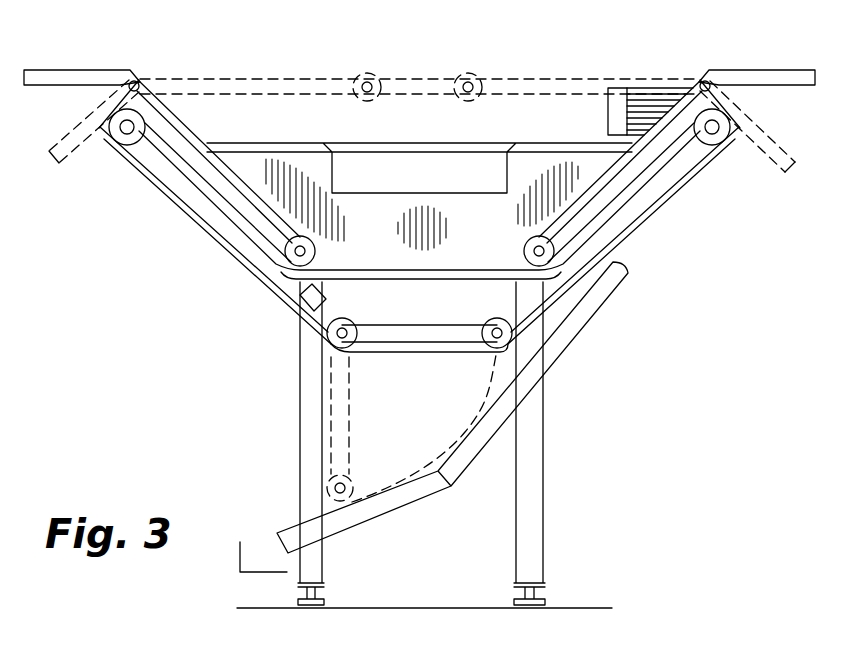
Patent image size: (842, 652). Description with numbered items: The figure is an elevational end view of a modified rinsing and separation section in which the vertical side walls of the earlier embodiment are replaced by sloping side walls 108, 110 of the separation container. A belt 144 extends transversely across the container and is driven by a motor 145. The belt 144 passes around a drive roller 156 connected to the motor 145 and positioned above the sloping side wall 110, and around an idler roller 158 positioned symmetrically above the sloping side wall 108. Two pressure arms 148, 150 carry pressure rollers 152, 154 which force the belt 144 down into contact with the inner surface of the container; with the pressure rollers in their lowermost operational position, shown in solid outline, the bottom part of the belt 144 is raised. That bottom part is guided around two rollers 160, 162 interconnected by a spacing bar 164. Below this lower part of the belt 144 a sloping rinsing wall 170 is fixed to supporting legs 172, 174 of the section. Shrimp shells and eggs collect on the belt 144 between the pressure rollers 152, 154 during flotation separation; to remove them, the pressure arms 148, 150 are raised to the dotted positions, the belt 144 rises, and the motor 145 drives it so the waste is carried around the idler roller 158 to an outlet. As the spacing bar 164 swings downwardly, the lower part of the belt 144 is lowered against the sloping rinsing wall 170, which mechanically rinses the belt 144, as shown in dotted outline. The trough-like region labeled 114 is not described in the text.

The sloping side wall 108 is at (190, 183).
The sloping side wall 110 is at (612, 218).
The trough 114 is at (270, 178).
The belt 144 is at (660, 203).
The motor 145 is at (640, 110).
The pressure arm 148 is at (242, 188).
The pressure arm 150 is at (600, 190).
The pressure roller 152 is at (292, 290).
The pressure roller 154 is at (530, 250).
The drive roller 156 is at (724, 140).
The idler roller 158 is at (122, 132).
The roller 160 is at (345, 348).
The roller 162 is at (495, 318).
The spacing bar 164 is at (403, 335).
The sloping rinsing wall 170 is at (415, 492).
The supporting leg 172 is at (300, 378).
The supporting leg 174 is at (530, 552).